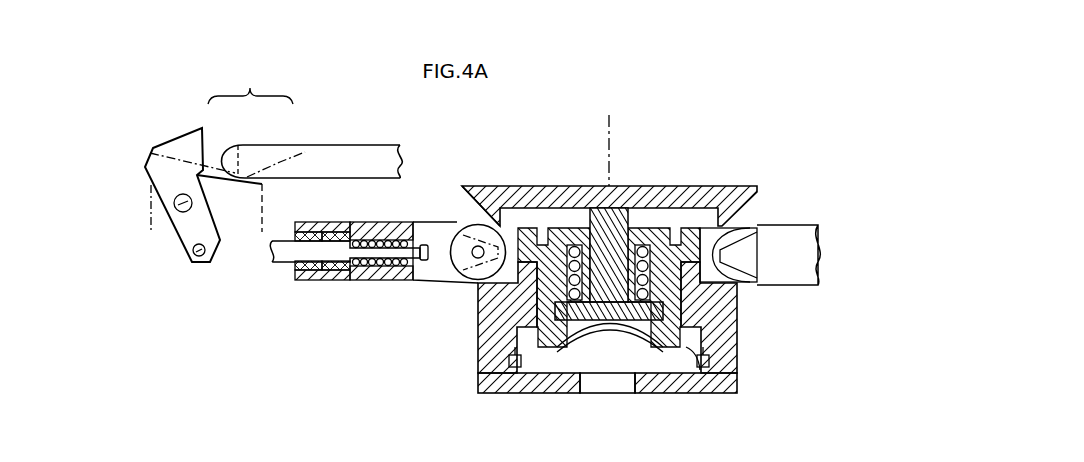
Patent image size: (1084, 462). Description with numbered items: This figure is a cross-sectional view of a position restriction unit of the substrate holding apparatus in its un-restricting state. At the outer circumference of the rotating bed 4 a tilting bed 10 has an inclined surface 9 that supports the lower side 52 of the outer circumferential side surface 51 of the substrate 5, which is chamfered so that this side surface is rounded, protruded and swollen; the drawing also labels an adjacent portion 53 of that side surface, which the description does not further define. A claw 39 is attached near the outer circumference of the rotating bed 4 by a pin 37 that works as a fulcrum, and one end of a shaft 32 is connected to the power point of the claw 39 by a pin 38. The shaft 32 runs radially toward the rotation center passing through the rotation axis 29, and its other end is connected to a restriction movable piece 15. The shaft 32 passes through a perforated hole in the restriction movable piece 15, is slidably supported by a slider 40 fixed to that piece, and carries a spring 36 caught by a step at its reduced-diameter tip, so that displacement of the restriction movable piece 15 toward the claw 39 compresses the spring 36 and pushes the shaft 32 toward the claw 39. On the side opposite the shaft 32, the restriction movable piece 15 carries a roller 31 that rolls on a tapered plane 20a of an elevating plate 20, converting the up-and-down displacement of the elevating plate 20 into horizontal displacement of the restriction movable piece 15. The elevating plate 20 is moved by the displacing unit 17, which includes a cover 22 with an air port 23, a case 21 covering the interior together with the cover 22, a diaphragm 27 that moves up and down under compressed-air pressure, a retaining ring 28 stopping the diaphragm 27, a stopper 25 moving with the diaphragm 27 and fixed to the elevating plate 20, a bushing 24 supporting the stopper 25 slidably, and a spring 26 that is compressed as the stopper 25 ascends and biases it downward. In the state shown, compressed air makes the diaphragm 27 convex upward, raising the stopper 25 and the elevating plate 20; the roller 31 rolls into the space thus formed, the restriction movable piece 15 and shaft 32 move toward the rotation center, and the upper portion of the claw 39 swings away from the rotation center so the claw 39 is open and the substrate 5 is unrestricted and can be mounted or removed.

The rotating bed 4 is at (146, 215).
The substrate 5 is at (340, 162).
The inclined surface 9 is at (262, 178).
The tilting bed 10 is at (266, 212).
The restriction movable piece 15 is at (364, 232).
The displacing unit 17 is at (746, 168).
The elevating plate 20 is at (586, 204).
The tapered plane 20a is at (465, 213).
The case 21 is at (738, 337).
The cover 22 is at (540, 393).
The air port 23 is at (624, 393).
The bushing 24 is at (648, 232).
The stopper 25 is at (630, 214).
The spring 26 is at (733, 318).
The diaphragm 27 is at (636, 336).
The retaining ring 28 is at (737, 385).
The rotation axis 29 is at (611, 123).
The roller 31 is at (476, 282).
The shaft 32 is at (290, 263).
The spring 36 is at (376, 270).
The pin 37 is at (176, 203).
The pin 38 is at (194, 252).
The claw 39 is at (197, 131).
The slider 40 is at (336, 280).
The outer circumferential side surface 51 is at (250, 83).
The lower side 52 is at (212, 176).
The head 53 is at (240, 147).